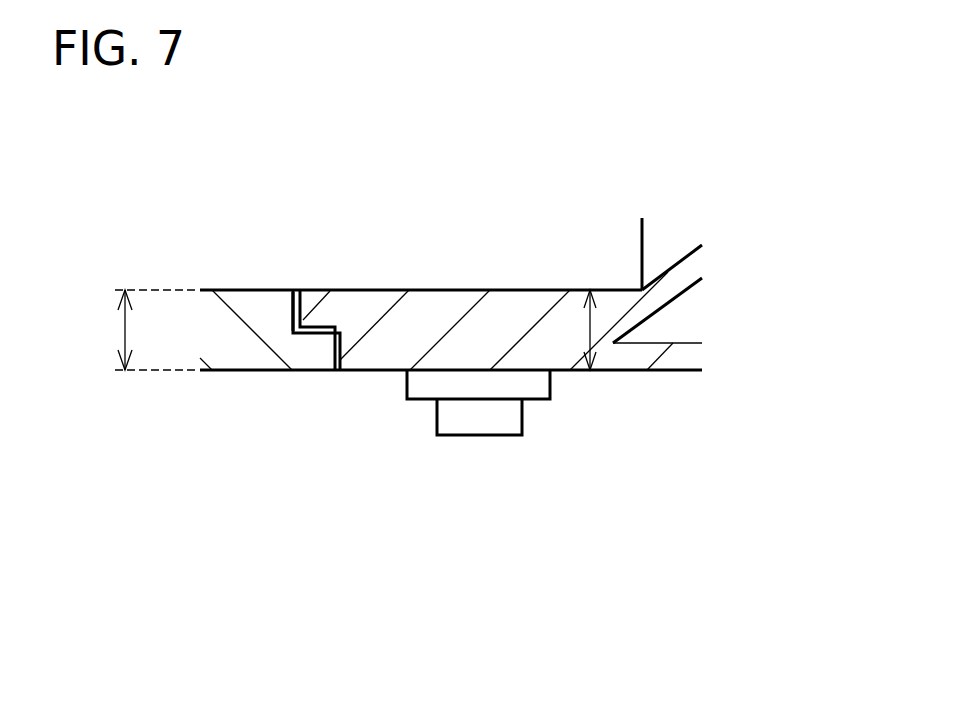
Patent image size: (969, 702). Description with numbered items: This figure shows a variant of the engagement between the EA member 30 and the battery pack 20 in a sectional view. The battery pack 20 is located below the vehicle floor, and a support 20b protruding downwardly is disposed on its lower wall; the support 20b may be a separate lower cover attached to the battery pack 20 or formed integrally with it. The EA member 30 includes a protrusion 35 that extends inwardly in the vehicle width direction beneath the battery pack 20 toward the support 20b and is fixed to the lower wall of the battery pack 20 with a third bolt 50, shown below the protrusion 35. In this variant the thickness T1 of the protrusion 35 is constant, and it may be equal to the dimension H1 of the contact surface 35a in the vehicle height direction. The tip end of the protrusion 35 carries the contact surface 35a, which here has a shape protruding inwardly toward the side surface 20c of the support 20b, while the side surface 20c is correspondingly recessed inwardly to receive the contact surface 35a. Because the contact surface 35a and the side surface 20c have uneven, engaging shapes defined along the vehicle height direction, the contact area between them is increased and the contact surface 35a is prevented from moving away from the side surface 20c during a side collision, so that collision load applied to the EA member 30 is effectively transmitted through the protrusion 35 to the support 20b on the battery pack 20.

The battery pack 20 is at (195, 192).
The support 20b is at (253, 323).
The side surface of the support 20c is at (337, 352).
The protrusion 35 is at (537, 328).
The contact surface 35a is at (293, 312).
The EA member 30 is at (765, 241).
The third bolt 50 is at (485, 423).
The dimension of the contact surface in the vehicle height direction H1 is at (104, 330).
The thickness of the protrusion T1 is at (592, 300).